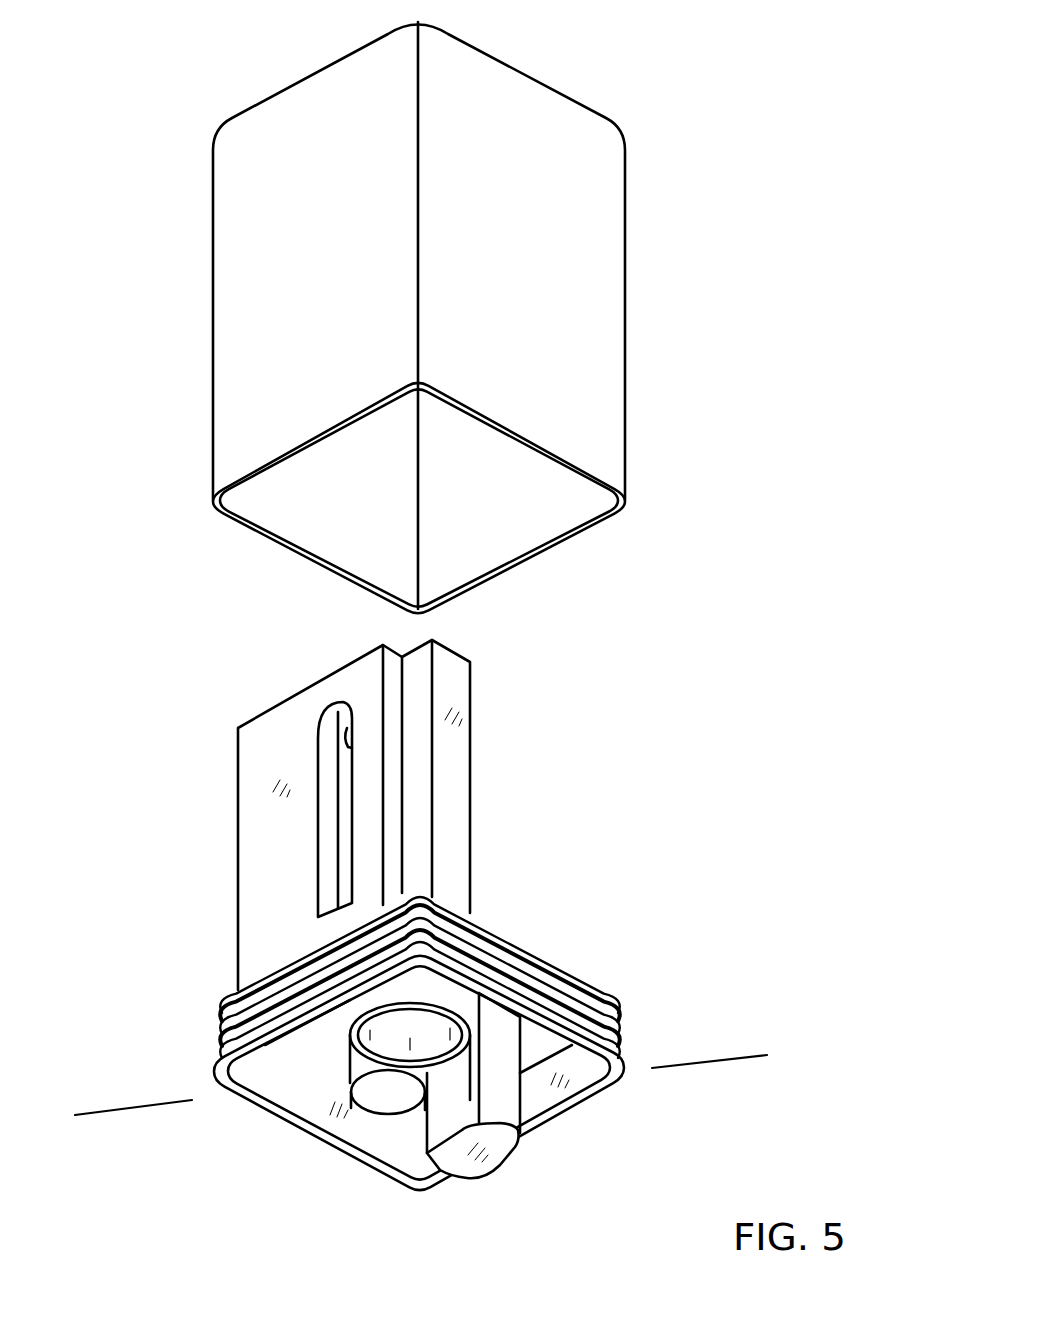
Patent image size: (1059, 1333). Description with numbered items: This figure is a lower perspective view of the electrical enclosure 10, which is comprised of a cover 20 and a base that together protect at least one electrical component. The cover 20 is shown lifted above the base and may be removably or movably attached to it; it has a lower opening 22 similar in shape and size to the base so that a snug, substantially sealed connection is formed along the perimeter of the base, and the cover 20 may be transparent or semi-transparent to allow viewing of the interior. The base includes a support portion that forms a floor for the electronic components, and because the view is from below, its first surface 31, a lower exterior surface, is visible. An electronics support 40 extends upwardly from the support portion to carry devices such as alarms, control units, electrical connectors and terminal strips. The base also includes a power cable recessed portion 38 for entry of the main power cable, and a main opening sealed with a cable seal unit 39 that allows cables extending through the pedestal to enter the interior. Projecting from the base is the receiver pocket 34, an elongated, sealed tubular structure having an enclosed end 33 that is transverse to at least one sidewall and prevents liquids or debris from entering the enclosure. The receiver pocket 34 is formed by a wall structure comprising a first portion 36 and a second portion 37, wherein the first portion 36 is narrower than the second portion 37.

The electrical enclosure 10 is at (732, 697).
The cover 20 is at (625, 273).
The lower opening 22 is at (570, 533).
The first surface 31 is at (307, 1042).
The enclosed end 33 is at (467, 1178).
The receiver pocket 34 is at (493, 1172).
The first portion 36 is at (508, 1107).
The second portion 37 is at (450, 1118).
The power cable recessed portion 38 is at (373, 1100).
The cable seal unit 39 is at (453, 998).
The electronics support 40 is at (256, 767).